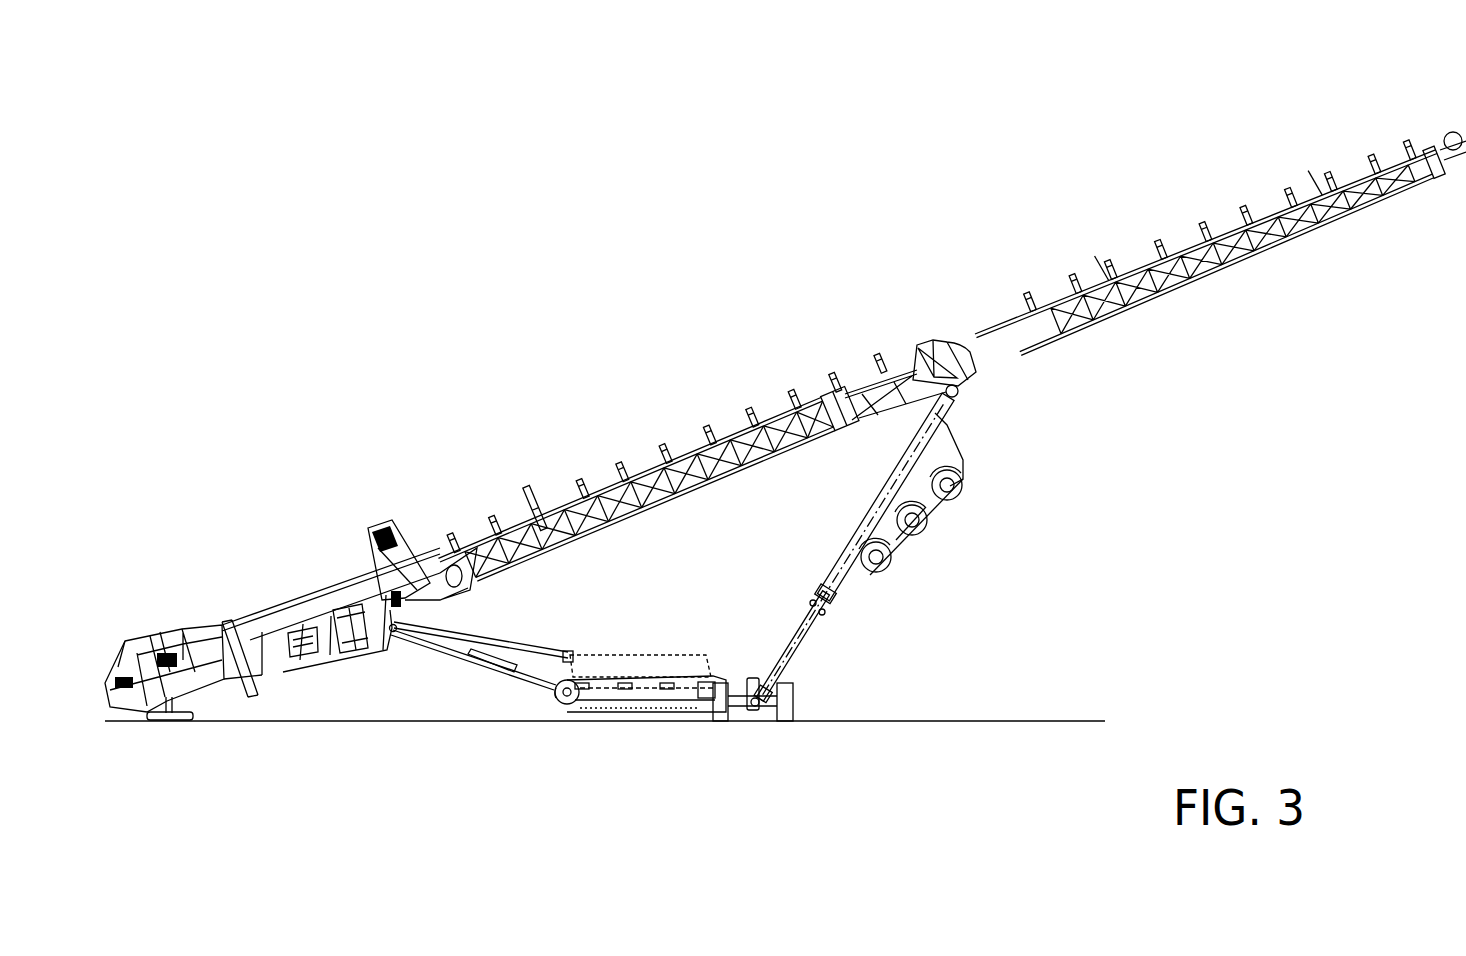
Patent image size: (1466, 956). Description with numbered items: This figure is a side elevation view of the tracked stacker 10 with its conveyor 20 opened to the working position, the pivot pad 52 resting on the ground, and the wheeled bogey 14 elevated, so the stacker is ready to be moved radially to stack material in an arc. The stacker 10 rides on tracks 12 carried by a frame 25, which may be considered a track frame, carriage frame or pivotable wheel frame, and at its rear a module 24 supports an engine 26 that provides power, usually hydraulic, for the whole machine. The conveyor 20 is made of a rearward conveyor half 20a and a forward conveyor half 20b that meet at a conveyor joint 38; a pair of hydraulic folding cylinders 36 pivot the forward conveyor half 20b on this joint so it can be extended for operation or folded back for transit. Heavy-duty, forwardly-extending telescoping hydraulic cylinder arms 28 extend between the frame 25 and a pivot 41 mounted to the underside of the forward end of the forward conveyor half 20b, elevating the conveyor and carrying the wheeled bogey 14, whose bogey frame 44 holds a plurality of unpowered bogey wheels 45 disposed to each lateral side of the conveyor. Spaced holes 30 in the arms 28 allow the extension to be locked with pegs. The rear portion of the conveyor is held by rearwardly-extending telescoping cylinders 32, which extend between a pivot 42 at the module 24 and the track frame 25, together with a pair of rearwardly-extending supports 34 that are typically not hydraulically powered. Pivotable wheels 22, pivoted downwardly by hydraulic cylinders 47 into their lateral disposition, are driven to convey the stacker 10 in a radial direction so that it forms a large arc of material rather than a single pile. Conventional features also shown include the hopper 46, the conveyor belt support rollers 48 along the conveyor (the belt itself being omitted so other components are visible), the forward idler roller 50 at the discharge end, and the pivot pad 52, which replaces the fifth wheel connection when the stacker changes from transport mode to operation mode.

The tracked stacker 10 is at (401, 397).
The tracks 12 is at (643, 708).
The wheeled bogey 14 is at (949, 442).
The conveyor 20 is at (647, 443).
The rearward conveyor half 20a is at (723, 437).
The forward conveyor half 20b is at (1177, 253).
The pivotable wheels 22 is at (787, 722).
The module 24 is at (324, 658).
The frame 25 is at (610, 666).
The engine 26 is at (355, 633).
The telescoping hydraulic cylinder arms 28 is at (817, 597).
The spaced holes 30 is at (823, 616).
The rearwardly-extending telescoping cylinders 32 is at (451, 658).
The rearwardly-extending supports 34 is at (485, 644).
The hydraulic folding cylinders 36 is at (867, 400).
The conveyor joint 38 is at (945, 342).
The pivot 41 is at (951, 394).
The pivot 42 is at (394, 636).
The bogey frame 44 is at (889, 535).
The bogey wheels 45 is at (927, 530).
The hopper 46 is at (180, 631).
The hydraulic cylinders 47 is at (751, 692).
The conveyor belt support rollers 48 is at (624, 471).
The forward idler roller 50 is at (1447, 143).
The pivot pad 52 is at (172, 718).